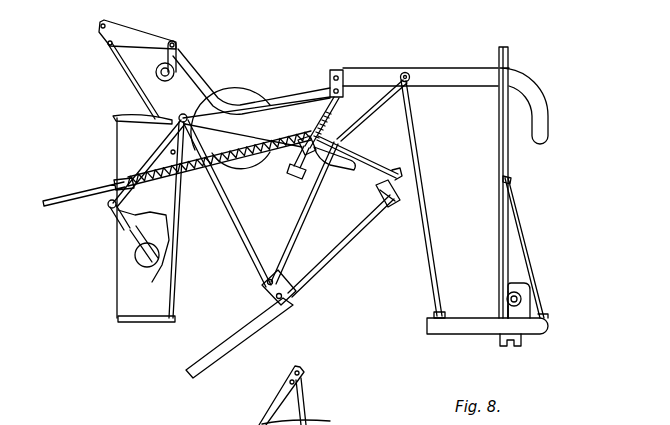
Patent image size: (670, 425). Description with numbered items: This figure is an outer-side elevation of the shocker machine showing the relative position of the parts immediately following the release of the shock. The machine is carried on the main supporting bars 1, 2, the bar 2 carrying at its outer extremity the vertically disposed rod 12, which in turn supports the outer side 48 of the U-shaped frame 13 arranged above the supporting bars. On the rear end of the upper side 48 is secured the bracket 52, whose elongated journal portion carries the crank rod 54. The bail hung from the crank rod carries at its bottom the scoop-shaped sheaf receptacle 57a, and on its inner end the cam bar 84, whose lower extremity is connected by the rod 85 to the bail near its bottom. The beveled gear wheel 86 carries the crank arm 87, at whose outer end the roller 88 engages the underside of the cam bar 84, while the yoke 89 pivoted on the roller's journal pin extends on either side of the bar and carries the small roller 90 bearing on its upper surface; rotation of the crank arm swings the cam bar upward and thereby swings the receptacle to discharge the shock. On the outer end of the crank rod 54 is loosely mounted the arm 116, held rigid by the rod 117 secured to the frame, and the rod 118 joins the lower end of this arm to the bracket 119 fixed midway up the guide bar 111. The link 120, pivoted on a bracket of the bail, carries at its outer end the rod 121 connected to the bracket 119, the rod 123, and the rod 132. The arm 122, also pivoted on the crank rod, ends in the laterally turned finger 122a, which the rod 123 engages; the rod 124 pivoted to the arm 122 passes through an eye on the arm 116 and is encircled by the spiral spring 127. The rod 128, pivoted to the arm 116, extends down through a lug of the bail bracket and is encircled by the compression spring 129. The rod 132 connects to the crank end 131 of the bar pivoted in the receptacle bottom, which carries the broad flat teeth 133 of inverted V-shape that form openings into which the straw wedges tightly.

The main supporting bar 1 is at (518, 297).
The main supporting bar 2 is at (474, 328).
The vertically disposed rod 12 is at (436, 249).
The U-shaped frame 13 is at (549, 107).
The outer side of the frame 48 is at (458, 72).
The bracket 52 is at (348, 68).
The crank rod 54 is at (373, 152).
The scoop-shaped member 57a is at (128, 300).
The cam bar 84 is at (137, 43).
The rod 85 is at (123, 70).
The beveled gear wheel 86 is at (250, 100).
The crank arm 87 is at (195, 97).
The roller 88 is at (157, 76).
The yoke 89 is at (179, 48).
The small roller 90 is at (172, 41).
The guide bar 111 is at (323, 260).
The arm 116 is at (350, 128).
The rod 117 is at (392, 70).
The rod 118 is at (292, 227).
The bracket 119 is at (285, 298).
The link 120 is at (160, 134).
The rod 121 is at (242, 240).
The arm 122 is at (322, 122).
The finger 122a is at (300, 178).
The rod 123 is at (271, 148).
The rod 124 is at (384, 205).
The spiral spring 127 is at (360, 145).
The rod 128 is at (47, 210).
The compression spring 129 is at (183, 170).
The crank end 131 is at (120, 225).
The rod 132 is at (150, 158).
The broad flat teeth 133 is at (140, 258).